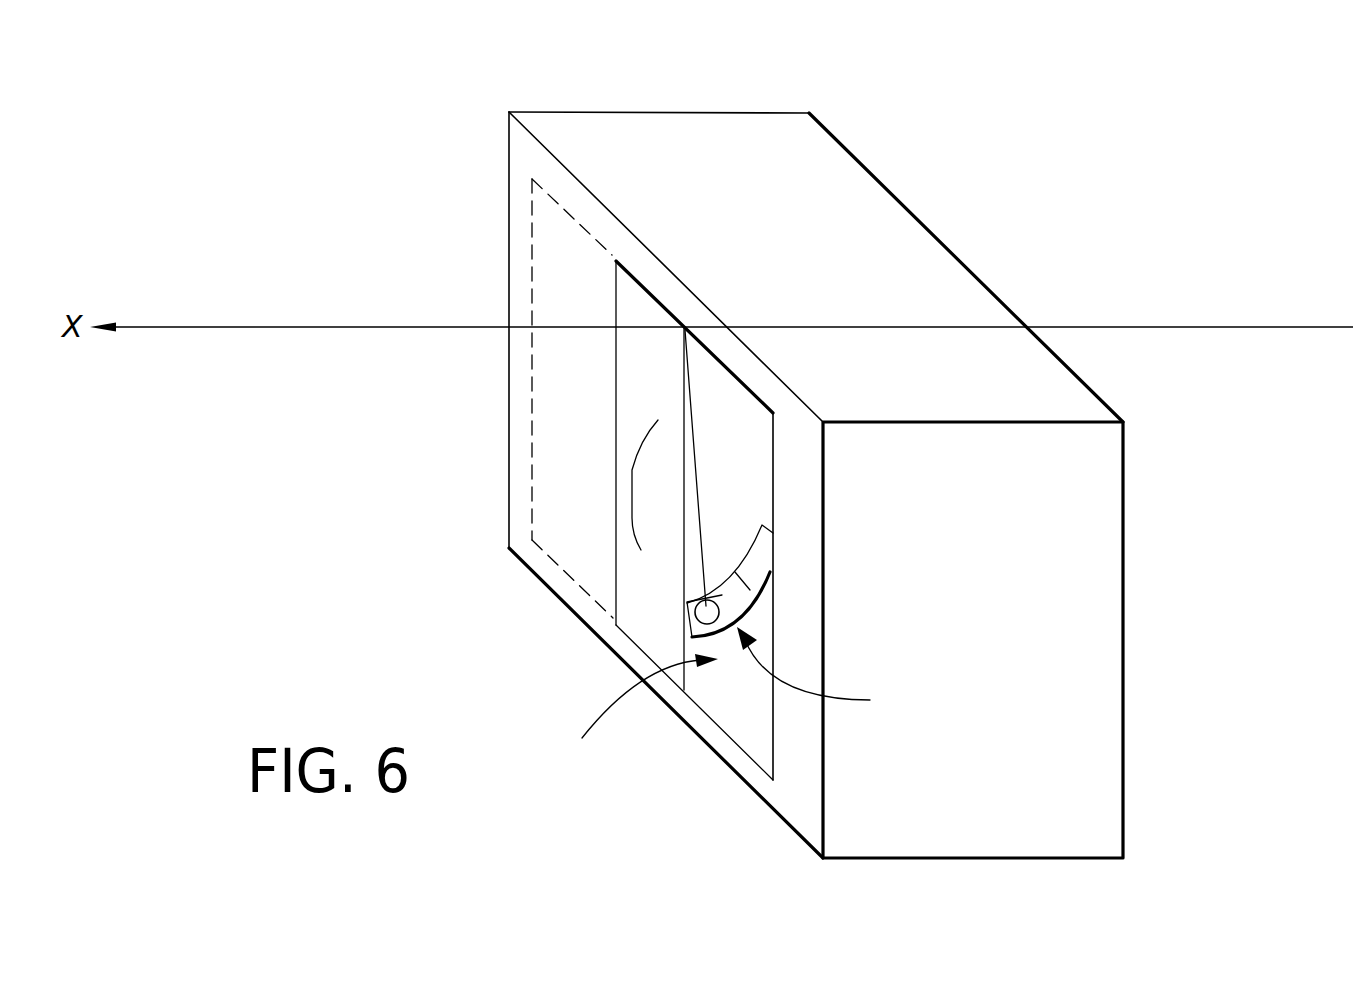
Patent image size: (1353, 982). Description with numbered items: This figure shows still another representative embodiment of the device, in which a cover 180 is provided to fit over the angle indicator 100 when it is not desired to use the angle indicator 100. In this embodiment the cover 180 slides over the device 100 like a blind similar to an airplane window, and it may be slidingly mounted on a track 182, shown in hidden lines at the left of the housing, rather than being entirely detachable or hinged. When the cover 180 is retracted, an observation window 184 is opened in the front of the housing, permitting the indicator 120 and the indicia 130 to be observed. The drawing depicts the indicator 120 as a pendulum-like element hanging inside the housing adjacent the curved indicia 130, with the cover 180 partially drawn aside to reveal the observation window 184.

The angle indicator 100 is at (898, 120).
The indicator 120 is at (712, 597).
The indicia 130 is at (835, 673).
The cover 180 is at (637, 590).
The track 182 is at (537, 588).
The observation window 184 is at (629, 722).